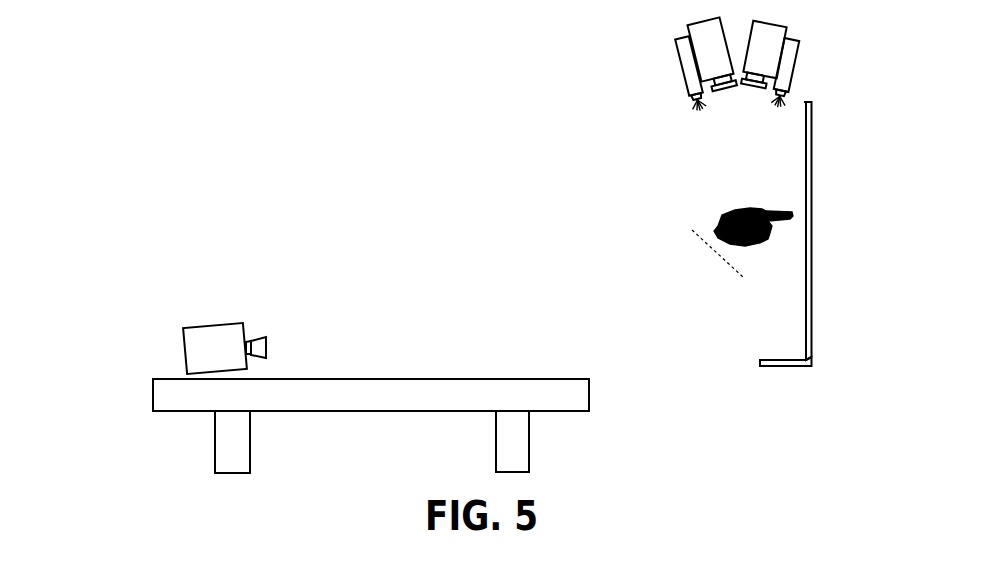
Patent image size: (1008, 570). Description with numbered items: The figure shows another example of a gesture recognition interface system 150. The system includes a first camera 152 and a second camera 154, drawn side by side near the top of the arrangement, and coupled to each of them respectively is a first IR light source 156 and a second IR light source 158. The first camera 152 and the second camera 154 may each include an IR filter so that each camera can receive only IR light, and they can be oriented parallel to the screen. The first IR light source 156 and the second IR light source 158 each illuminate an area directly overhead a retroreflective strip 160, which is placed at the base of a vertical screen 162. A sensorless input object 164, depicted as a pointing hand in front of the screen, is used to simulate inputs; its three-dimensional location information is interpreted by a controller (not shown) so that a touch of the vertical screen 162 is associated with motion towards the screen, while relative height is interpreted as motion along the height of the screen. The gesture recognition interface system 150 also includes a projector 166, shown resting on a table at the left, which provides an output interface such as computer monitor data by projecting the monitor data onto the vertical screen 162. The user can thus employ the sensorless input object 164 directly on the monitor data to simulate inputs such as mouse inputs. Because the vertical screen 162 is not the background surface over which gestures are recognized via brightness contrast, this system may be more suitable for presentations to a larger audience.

The gesture recognition interface system 150 is at (102, 50).
The first camera 152 is at (690, 31).
The second camera 154 is at (789, 29).
The first IR light source 156 is at (679, 80).
The second IR light source 158 is at (798, 69).
The retroreflective strip 160 is at (782, 367).
The vertical screen 162 is at (811, 211).
The sensorless input object 164 is at (733, 208).
The projector 166 is at (207, 325).